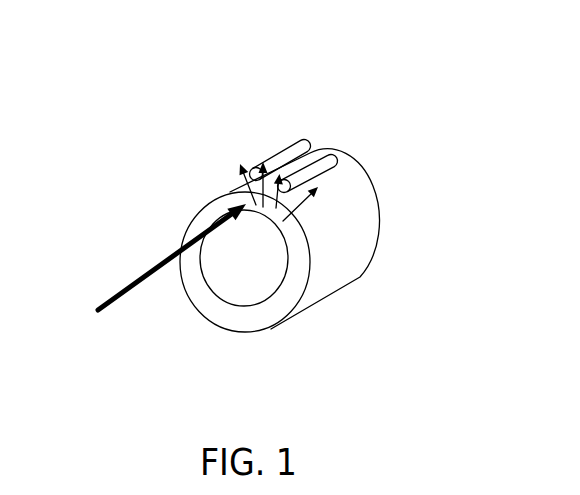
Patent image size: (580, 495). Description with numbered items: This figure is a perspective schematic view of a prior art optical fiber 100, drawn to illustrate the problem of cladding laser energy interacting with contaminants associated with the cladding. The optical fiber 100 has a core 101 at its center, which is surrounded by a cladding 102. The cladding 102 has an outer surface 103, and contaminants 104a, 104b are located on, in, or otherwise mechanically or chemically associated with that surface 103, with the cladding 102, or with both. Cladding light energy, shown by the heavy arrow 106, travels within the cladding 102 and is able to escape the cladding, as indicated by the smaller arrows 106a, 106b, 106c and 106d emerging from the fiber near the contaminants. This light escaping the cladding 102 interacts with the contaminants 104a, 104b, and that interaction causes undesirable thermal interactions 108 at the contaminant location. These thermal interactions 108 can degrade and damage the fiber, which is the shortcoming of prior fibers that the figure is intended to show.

The optical fiber 100 is at (466, 59).
The core 101 is at (226, 262).
The cladding 102 is at (291, 288).
The outer surface 103 is at (367, 202).
The contaminant 104a is at (331, 156).
The contaminant 104b is at (288, 150).
The cladding light energy 106 is at (113, 292).
The escaping cladding light 106a is at (300, 205).
The escaping cladding light 106b is at (262, 162).
The escaping cladding light 106c is at (278, 172).
The escaping cladding light 106d is at (238, 166).
The thermal interactions 108 is at (246, 173).